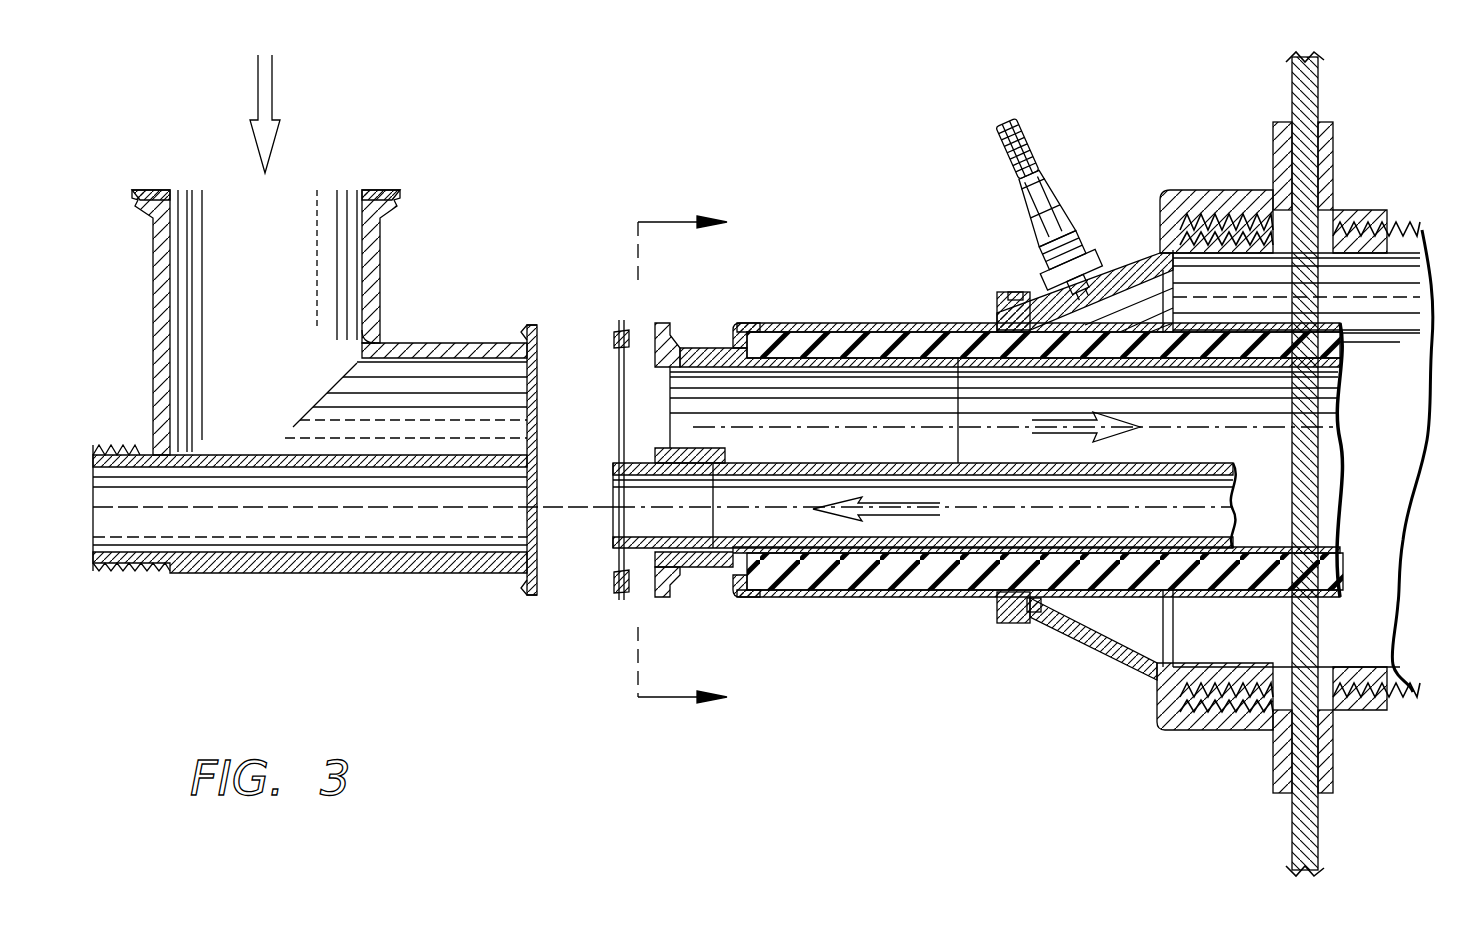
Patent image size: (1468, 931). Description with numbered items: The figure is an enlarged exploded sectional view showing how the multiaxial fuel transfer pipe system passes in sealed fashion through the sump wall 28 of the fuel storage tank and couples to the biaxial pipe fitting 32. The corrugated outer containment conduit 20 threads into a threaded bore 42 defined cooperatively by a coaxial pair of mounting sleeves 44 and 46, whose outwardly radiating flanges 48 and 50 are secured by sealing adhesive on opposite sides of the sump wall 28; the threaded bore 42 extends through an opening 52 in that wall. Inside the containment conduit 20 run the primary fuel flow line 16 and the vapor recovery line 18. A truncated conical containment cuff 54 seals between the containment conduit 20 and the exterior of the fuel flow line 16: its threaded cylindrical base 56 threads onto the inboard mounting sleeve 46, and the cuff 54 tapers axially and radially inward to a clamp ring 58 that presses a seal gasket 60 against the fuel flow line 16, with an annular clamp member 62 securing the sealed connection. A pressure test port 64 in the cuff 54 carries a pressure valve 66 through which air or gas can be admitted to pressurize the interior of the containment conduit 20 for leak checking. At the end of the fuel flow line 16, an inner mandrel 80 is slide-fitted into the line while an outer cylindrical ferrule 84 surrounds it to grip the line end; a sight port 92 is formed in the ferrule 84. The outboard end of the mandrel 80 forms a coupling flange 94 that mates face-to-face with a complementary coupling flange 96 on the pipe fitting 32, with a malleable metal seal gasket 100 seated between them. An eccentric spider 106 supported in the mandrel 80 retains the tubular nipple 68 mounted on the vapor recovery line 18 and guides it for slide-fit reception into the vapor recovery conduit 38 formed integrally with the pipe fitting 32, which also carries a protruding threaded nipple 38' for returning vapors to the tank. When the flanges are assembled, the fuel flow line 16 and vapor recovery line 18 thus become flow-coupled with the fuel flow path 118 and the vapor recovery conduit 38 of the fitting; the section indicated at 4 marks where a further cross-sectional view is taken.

The section line 4- 4 is at (682, 467).
The primary fuel flow line 16 is at (1327, 403).
The vapor recovery line 18 is at (1223, 503).
The outer containment conduit 20 is at (1382, 607).
The sump wall 28 is at (1320, 90).
The biaxial pipe fitting 32 is at (382, 280).
The vapor recovery conduit 38 is at (355, 548).
The threaded nipple 38' is at (119, 548).
The threaded bore 42 is at (1288, 250).
The mounting sleeve 44 is at (1372, 210).
The mounting sleeve 46 is at (1207, 213).
The flange 48 is at (1337, 147).
The flange 50 is at (1273, 147).
The opening 52 is at (1300, 700).
The containment cuff 54 is at (1077, 650).
The threaded cylindrical base 56 is at (1183, 731).
The clamp ring 58 is at (985, 612).
The seal gasket 60 is at (1040, 603).
The annular clamp member 62 is at (1003, 290).
The pressure test port 64 is at (1065, 287).
The pressure valve 66 is at (1052, 178).
The tubular nipple 68 is at (612, 548).
The inner mandrel 80 is at (842, 368).
The outer cylindrical ferrule 84 is at (873, 325).
The sight port 92 is at (780, 323).
The coupling flange 94 is at (673, 320).
The coupling flange 96 is at (397, 200).
The seal gasket 100 is at (615, 340).
The eccentric spider 106 is at (697, 444).
The fuel flow path 118 is at (497, 421).